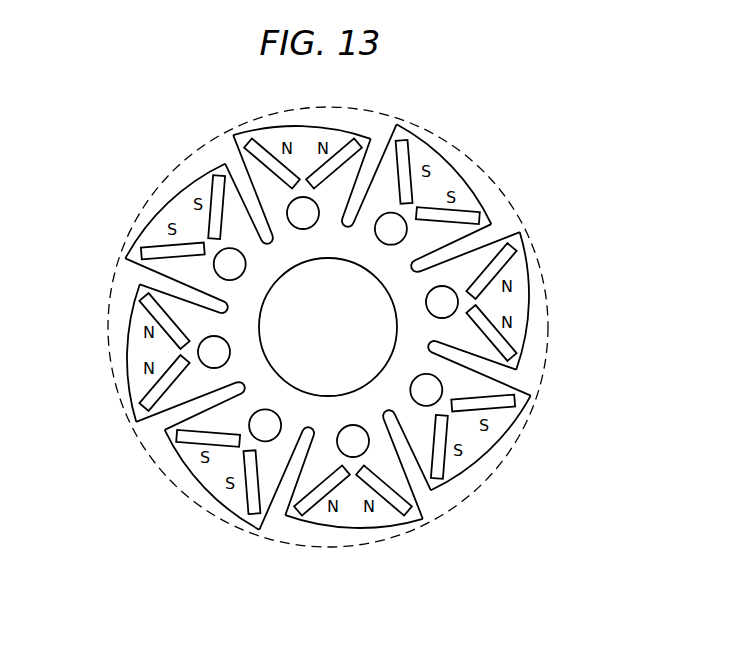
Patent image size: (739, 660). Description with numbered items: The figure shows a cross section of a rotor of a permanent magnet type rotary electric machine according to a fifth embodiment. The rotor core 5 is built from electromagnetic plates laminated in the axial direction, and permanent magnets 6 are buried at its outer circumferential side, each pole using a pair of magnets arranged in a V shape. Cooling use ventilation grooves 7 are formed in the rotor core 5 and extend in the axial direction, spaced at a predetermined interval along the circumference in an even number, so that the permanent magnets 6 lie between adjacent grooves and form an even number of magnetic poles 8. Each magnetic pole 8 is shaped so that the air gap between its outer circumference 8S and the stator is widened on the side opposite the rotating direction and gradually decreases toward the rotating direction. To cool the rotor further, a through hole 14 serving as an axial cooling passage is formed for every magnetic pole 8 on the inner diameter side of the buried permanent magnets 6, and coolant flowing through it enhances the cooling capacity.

The rotor core 5 is at (407, 368).
The permanent magnet 6 is at (186, 442).
The cooling use ventilation groove 7 is at (274, 527).
The magnetic pole 8 is at (211, 478).
The outer circumference 8S is at (360, 532).
The through hole 14 is at (396, 232).